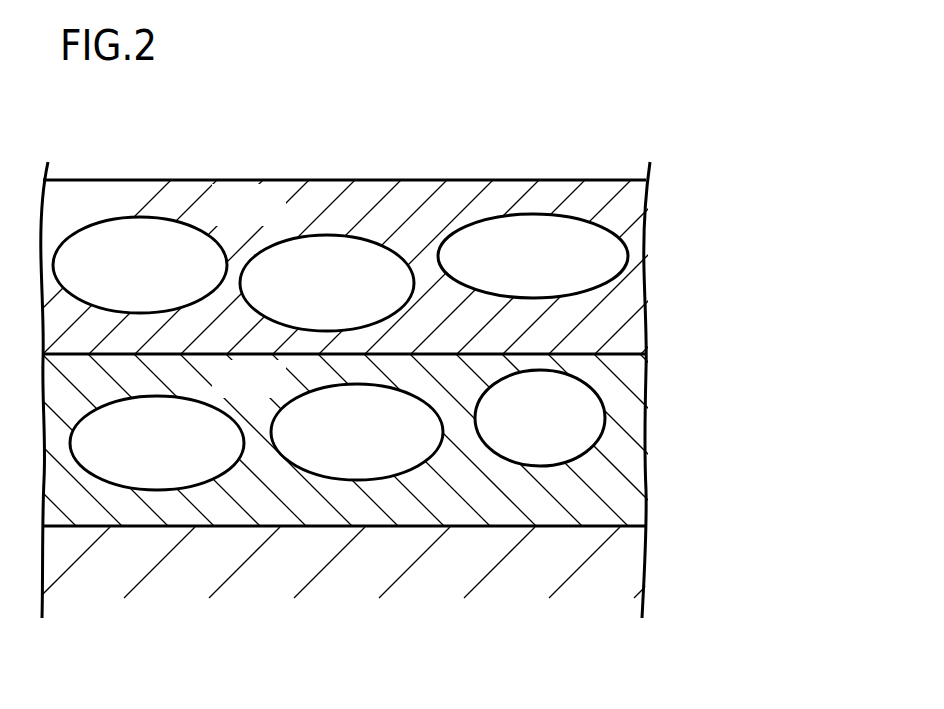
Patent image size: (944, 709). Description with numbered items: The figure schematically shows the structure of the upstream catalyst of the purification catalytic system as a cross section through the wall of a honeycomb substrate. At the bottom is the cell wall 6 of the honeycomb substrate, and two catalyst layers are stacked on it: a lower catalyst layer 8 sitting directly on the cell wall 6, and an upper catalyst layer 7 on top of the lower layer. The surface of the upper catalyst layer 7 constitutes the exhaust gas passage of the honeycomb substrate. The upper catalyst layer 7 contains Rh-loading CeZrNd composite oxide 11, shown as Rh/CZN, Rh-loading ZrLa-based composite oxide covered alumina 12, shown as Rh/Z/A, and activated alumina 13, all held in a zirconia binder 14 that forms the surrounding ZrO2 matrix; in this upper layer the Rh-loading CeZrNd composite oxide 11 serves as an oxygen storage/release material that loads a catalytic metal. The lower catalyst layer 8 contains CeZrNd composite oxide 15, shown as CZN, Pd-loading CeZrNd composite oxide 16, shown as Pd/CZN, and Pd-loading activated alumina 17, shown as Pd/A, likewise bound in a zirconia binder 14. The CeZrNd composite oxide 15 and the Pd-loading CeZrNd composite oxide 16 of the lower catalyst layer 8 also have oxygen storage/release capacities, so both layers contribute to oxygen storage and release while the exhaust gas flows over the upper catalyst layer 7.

The cell wall 6 is at (591, 515).
The upper catalyst layer 7 is at (344, 216).
The lower catalyst layer 8 is at (371, 462).
The Rh-loading CeZrNd composite oxide 11 is at (112, 217).
The Rh-loading ZrLa-based composite oxide covered alumina 12 is at (332, 235).
The activated alumina 13 is at (522, 214).
The zirconia binder 14 is at (313, 190).
The CeZrNd composite oxide 15 is at (547, 467).
The Pd-loading CeZrNd composite oxide 16 is at (153, 490).
The Pd-loading activated alumina 17 is at (343, 480).